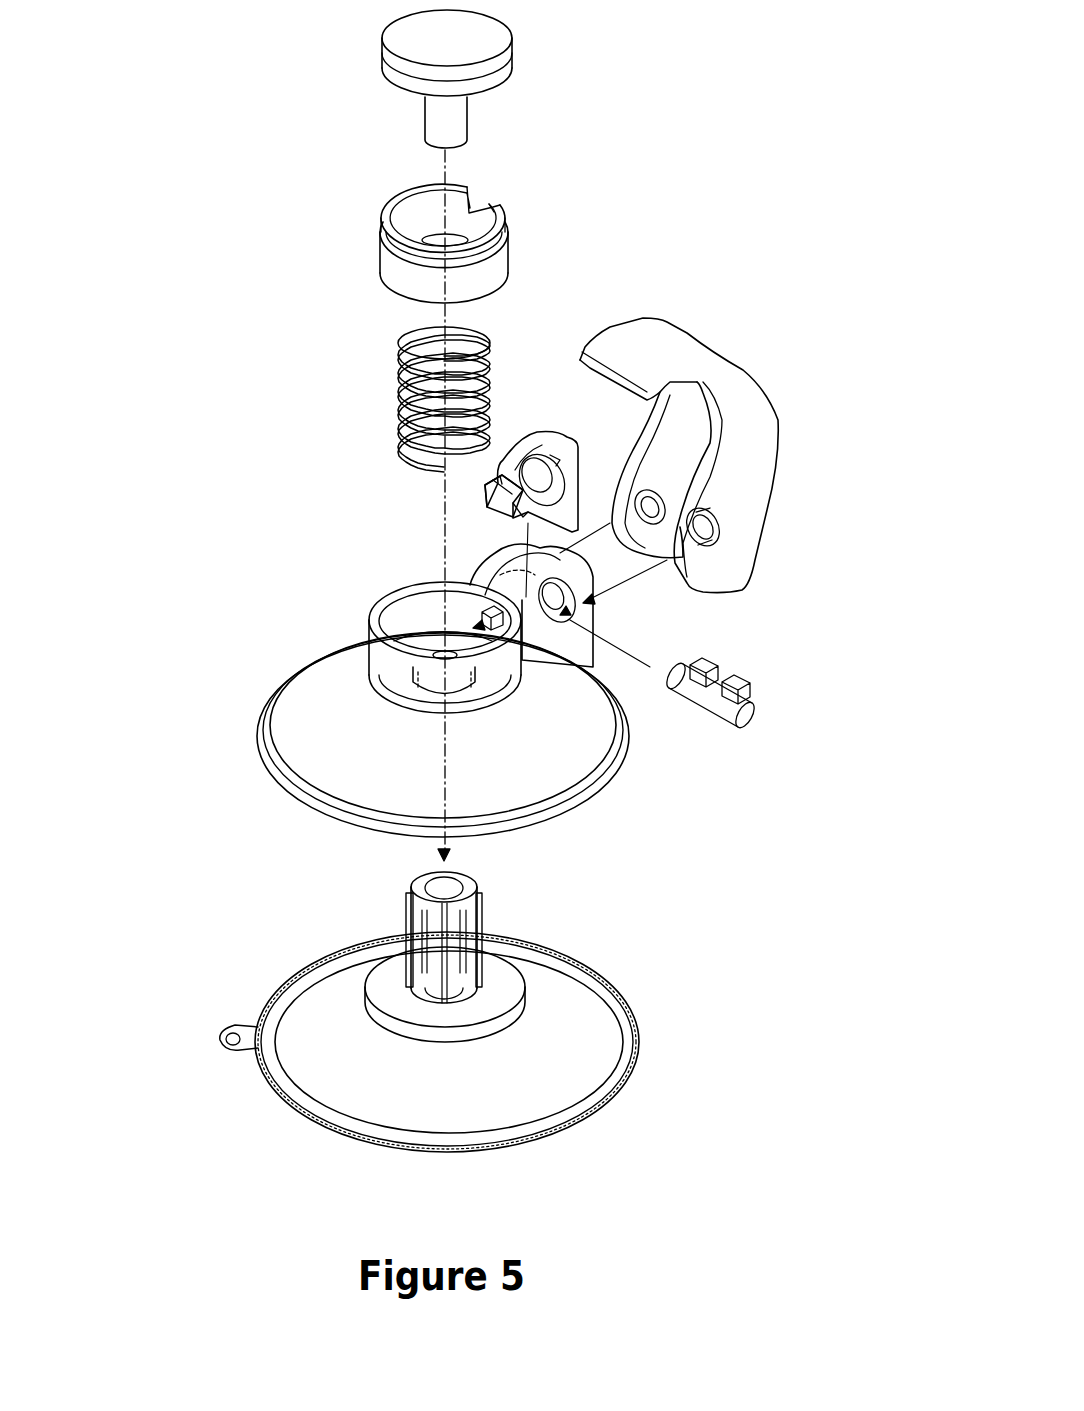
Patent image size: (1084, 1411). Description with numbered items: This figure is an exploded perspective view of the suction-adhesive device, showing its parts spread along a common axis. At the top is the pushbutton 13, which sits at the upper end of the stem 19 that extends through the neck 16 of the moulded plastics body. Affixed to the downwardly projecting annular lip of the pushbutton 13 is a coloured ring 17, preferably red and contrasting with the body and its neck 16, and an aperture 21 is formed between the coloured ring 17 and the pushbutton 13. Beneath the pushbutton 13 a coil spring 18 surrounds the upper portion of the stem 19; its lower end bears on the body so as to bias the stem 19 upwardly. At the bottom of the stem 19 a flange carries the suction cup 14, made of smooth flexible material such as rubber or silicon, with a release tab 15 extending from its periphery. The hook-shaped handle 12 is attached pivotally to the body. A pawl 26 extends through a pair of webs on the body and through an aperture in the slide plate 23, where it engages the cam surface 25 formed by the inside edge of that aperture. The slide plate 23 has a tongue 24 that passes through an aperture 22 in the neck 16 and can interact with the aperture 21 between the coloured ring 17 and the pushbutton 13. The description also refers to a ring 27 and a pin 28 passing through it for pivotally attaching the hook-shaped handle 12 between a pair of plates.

The handle 12 is at (662, 347).
The pushbutton 13 is at (480, 33).
The suction cup 14 is at (580, 1003).
The release tab 15 is at (225, 1023).
The neck 16 is at (373, 613).
The coloured ring 17 is at (490, 268).
The coil spring 18 is at (487, 343).
The stem 19 is at (463, 922).
The aperture 21 is at (482, 203).
The aperture 22 is at (480, 614).
The slide plate 23 is at (567, 502).
The tongue 24 is at (522, 463).
The cam surface 25 is at (533, 470).
The pawl 26 is at (750, 693).
The ring 27 is at (408, 910).
The pin 28 is at (477, 672).